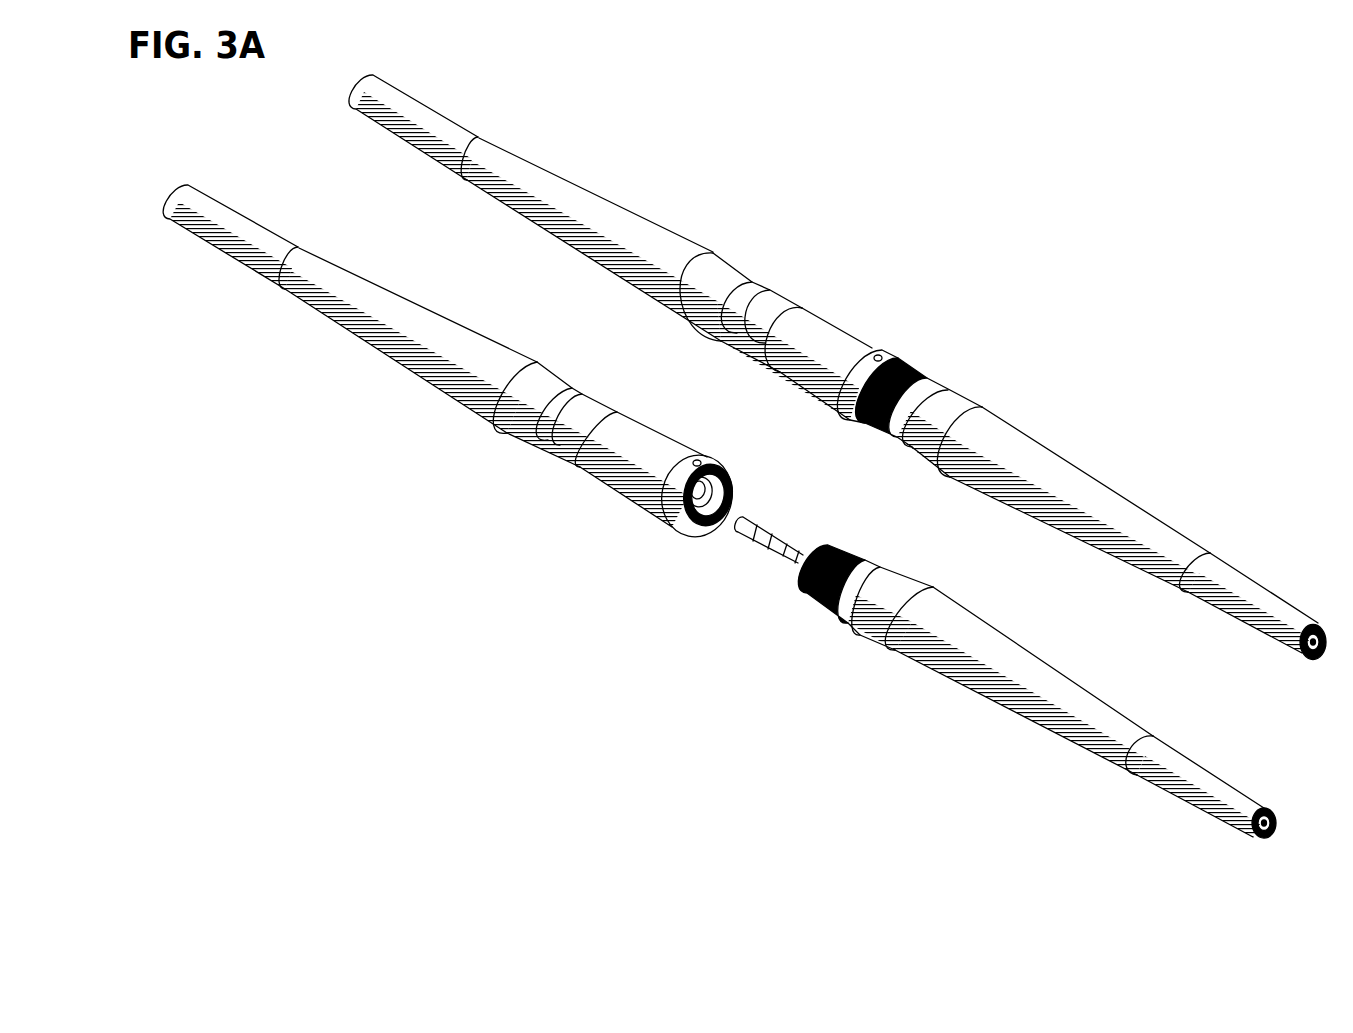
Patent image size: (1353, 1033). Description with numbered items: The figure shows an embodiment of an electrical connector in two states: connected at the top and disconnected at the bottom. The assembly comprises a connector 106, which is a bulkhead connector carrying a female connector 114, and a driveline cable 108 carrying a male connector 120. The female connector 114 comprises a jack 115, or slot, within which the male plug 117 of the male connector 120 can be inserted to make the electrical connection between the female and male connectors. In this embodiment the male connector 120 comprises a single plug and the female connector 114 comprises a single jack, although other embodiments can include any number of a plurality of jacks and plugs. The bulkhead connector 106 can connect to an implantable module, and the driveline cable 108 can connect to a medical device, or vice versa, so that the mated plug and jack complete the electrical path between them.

The connector 106 is at (498, 421).
The driveline cable 108 is at (1005, 668).
The female connector 114 is at (692, 530).
The jack 115 is at (722, 488).
The male plug 117 is at (797, 518).
The male connector 120 is at (767, 578).